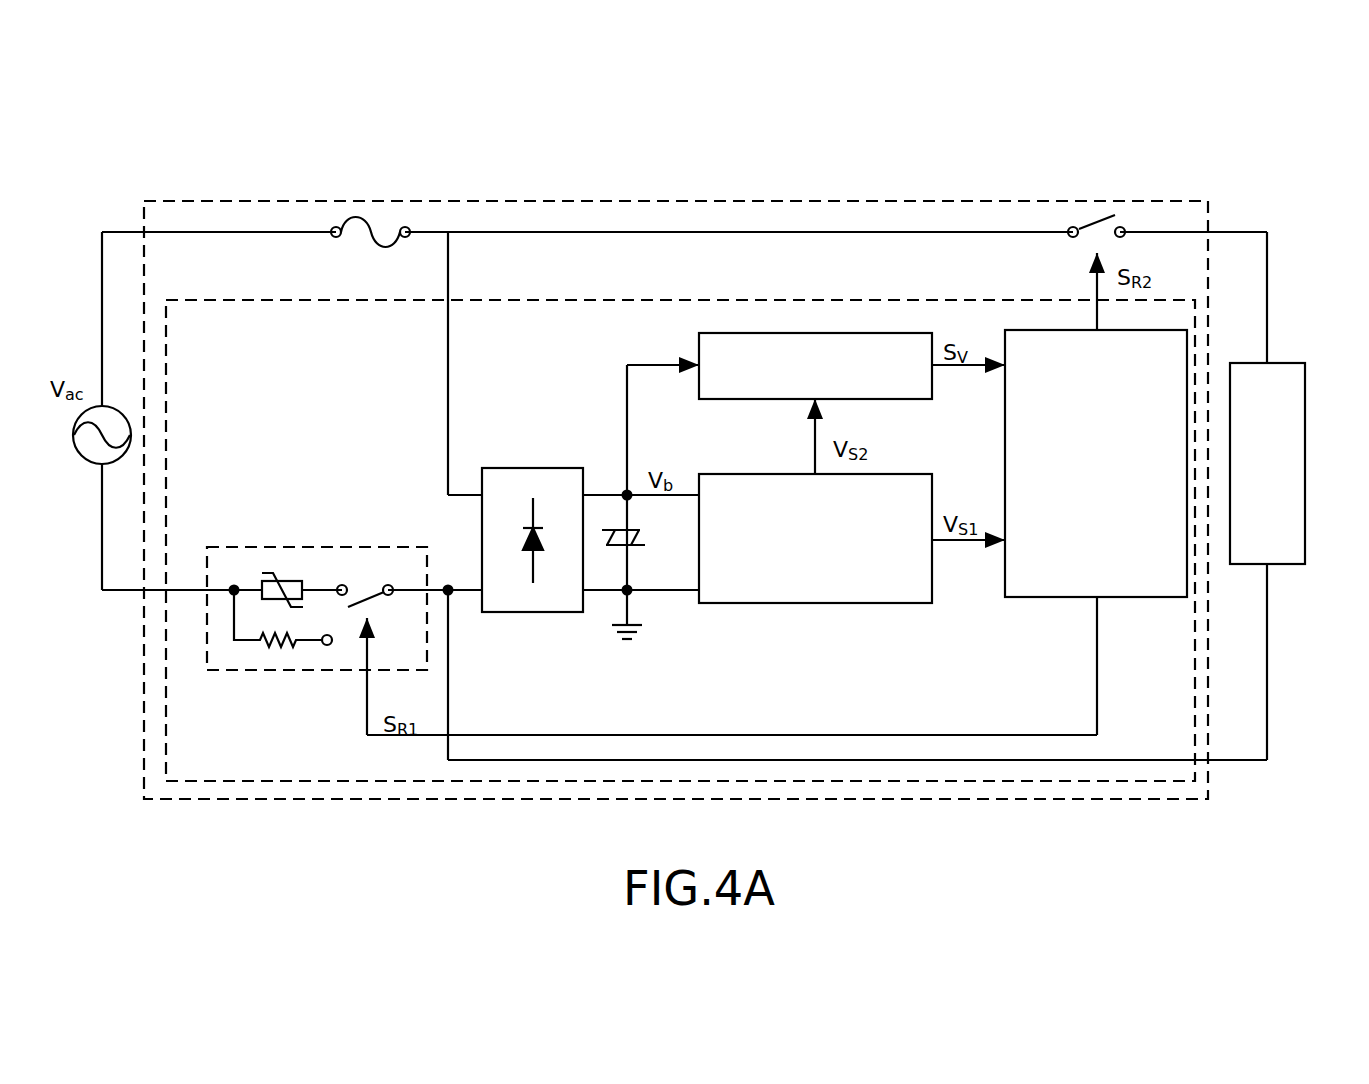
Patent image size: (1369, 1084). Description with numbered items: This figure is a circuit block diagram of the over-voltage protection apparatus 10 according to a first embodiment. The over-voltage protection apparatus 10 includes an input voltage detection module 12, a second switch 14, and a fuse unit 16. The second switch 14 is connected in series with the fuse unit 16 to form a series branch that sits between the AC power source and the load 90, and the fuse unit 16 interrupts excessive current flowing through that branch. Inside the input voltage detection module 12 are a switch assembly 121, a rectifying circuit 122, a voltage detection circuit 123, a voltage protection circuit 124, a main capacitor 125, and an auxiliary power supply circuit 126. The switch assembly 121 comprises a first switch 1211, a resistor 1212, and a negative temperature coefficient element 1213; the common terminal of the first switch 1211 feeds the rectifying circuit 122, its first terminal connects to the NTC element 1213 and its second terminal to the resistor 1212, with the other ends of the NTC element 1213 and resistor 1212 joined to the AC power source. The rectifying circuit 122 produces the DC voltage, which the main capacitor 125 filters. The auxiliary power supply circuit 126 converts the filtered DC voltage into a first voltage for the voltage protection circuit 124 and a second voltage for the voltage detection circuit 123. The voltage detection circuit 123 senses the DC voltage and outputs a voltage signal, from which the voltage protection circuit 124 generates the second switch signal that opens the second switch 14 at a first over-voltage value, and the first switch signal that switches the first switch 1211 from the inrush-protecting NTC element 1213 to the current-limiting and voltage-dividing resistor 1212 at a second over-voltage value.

The over-voltage protection apparatus 10 is at (795, 207).
The input voltage detection module 12 is at (888, 308).
The second switch 14 is at (1095, 200).
The fuse unit 16 is at (383, 228).
The load 90 is at (1285, 377).
The switch assembly 121 is at (230, 547).
The first switch 1211 is at (370, 573).
The resistor 1212 is at (279, 658).
The negative temperature coefficient (NTC) element 1213 is at (288, 573).
The rectifying circuit 122 is at (505, 490).
The voltage detection circuit 123 is at (737, 388).
The voltage protection circuit 124 is at (1128, 582).
The main capacitor 125 is at (652, 538).
The auxiliary power supply circuit 126 is at (873, 590).